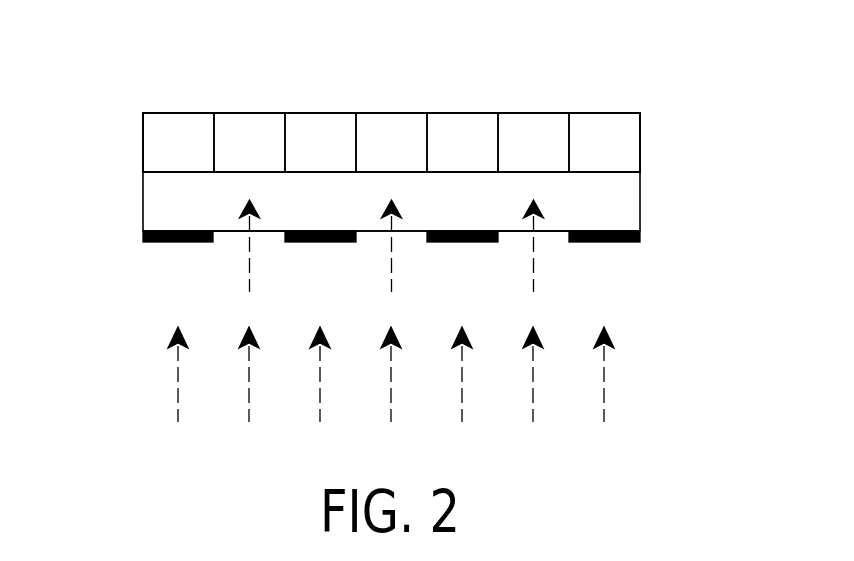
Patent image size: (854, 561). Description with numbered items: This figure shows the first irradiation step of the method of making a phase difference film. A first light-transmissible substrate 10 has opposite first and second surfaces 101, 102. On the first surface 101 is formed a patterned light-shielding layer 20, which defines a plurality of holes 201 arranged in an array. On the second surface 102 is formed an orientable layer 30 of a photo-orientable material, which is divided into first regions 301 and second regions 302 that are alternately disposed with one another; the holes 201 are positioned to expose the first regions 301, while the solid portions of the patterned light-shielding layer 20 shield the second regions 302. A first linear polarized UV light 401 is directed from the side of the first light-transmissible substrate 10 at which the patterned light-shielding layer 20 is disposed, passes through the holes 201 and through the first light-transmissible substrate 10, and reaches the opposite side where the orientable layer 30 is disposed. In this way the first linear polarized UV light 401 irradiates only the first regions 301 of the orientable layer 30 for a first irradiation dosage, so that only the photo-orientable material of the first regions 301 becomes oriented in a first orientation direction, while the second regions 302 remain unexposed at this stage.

The first light-transmissible substrate 10 is at (142, 200).
The first surface 101 is at (376, 232).
The second surface 102 is at (390, 174).
The patterned light-shielding layer 20 is at (602, 243).
The holes 201 is at (228, 238).
The orientable layer 30 is at (142, 113).
The first regions 301 is at (249, 113).
The second regions 302 is at (178, 113).
The first linear polarized UV light 401 is at (604, 388).